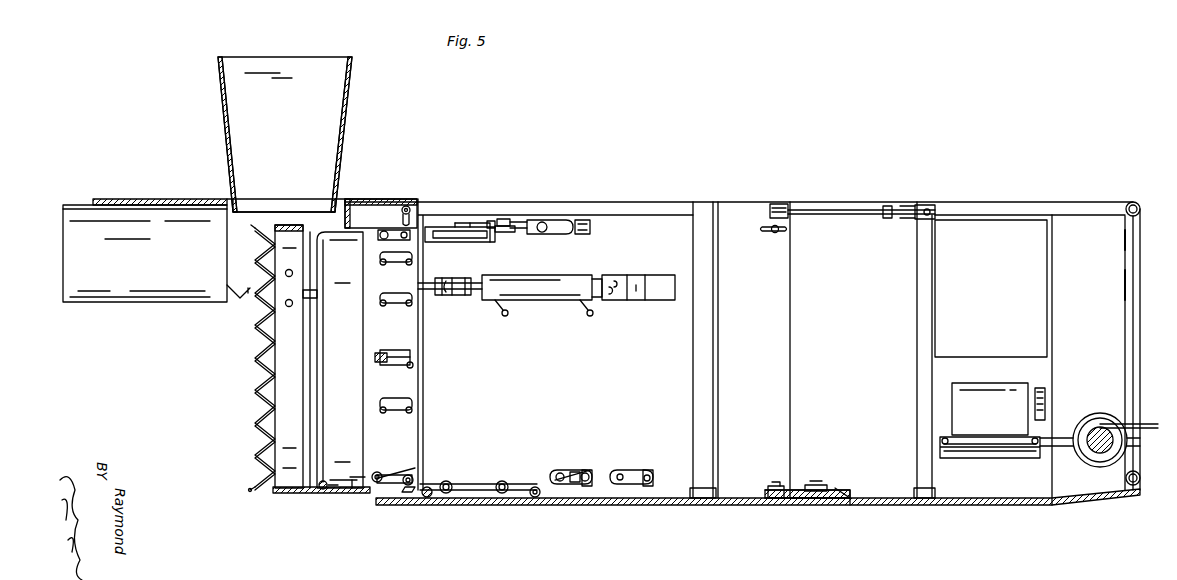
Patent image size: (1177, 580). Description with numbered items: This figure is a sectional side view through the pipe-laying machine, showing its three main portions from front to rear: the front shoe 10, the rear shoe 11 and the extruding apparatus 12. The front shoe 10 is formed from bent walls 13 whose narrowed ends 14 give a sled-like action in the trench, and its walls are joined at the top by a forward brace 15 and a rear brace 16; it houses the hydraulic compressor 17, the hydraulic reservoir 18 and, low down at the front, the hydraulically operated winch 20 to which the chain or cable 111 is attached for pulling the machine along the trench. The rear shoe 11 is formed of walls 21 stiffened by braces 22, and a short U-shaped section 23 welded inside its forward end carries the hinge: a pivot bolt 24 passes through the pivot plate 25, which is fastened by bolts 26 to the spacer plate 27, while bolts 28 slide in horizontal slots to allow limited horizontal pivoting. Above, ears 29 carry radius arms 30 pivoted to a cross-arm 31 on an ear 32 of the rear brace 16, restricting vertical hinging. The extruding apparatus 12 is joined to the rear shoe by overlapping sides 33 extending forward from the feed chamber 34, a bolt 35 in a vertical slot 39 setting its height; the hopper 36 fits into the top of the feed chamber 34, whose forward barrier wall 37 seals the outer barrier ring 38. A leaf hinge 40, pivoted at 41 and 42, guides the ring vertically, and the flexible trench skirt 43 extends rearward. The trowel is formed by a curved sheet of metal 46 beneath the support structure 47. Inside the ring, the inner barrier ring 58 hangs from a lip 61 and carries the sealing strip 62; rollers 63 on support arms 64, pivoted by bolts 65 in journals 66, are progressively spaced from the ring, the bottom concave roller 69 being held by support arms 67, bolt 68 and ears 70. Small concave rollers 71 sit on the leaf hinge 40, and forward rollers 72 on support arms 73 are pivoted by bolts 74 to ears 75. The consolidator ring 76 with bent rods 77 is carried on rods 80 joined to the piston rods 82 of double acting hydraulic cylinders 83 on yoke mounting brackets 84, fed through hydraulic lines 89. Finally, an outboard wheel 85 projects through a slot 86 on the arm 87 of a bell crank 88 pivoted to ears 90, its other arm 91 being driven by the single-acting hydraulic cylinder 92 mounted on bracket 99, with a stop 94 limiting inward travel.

The front shoe 10 is at (973, 186).
The rear shoe 11 is at (603, 192).
The extruding apparatus 12 is at (380, 187).
The walls 13 is at (894, 350).
The narrowed ends 14 is at (1052, 506).
The forward brace 15 is at (1126, 216).
The rear brace 16 is at (920, 217).
The hydraulic compressor 17 is at (992, 420).
The hydraulic reservoir 18 is at (991, 288).
The hydraulically operated winch 20 is at (1096, 413).
The walls 21 is at (659, 244).
The braces 22 is at (697, 200).
The U-shaped section 23 is at (763, 350).
The pivot bolt 24 is at (775, 482).
The pivot plate 25 is at (800, 489).
The bolts 26 is at (818, 484).
The spacer plate 27 is at (843, 495).
The bolts 28 is at (773, 233).
The ears 29 is at (780, 204).
The radius arms 30 is at (808, 216).
The cross-arm 31 is at (885, 218).
The ear 32 is at (909, 205).
The overlapping sides 33 is at (412, 206).
The feed chamber 34 is at (242, 300).
The bolt 35 is at (400, 213).
The hopper 36 is at (350, 137).
The forward barrier wall 37 is at (345, 220).
The outer barrier ring 38 is at (387, 242).
The vertical slot 39 is at (414, 224).
The leaf hinge 40 is at (473, 484).
The pivot 41 is at (427, 487).
The pivot 42 is at (540, 488).
The flexible trench skirt 43 is at (296, 494).
The curved sheet of metal 46 is at (66, 241).
The upper rectangular support structure 47 is at (188, 199).
The inner barrier ring 58 is at (362, 248).
The lip 61 is at (355, 478).
The sealing strip 62 is at (323, 490).
The rollers 63 is at (382, 265).
The support arms 64 is at (400, 350).
The bolts 65 is at (415, 366).
The journals 66 is at (412, 357).
The support arms 67 is at (412, 470).
The bolt 68 is at (410, 486).
The concave roller 69 is at (382, 477).
The ears 70 is at (405, 488).
The small concave rollers 71 is at (448, 481).
The rollers 72 is at (557, 468).
The support arms 73 is at (576, 470).
The bolts 74 is at (575, 480).
The ears 75 is at (588, 469).
The consolidator ring 76 is at (290, 432).
The bent rods 77 is at (258, 358).
The rods 80 is at (430, 283).
The piston rods 82 is at (478, 296).
The double acting hydraulic cylinders 83 is at (538, 280).
The yoke mounting brackets 84 is at (650, 302).
The outboard wheels 85 is at (485, 243).
The slots 86 is at (455, 243).
The arm 87 is at (472, 223).
The bell crank 88 is at (510, 232).
The hydraulic lines 89 is at (508, 316).
The ears 90 is at (506, 219).
The arm 91 is at (520, 222).
The single-acting hydraulic cylinder 92 is at (565, 235).
The stop 94 is at (492, 221).
The bracket 99 is at (590, 234).
The chain or cable 111 is at (1158, 424).